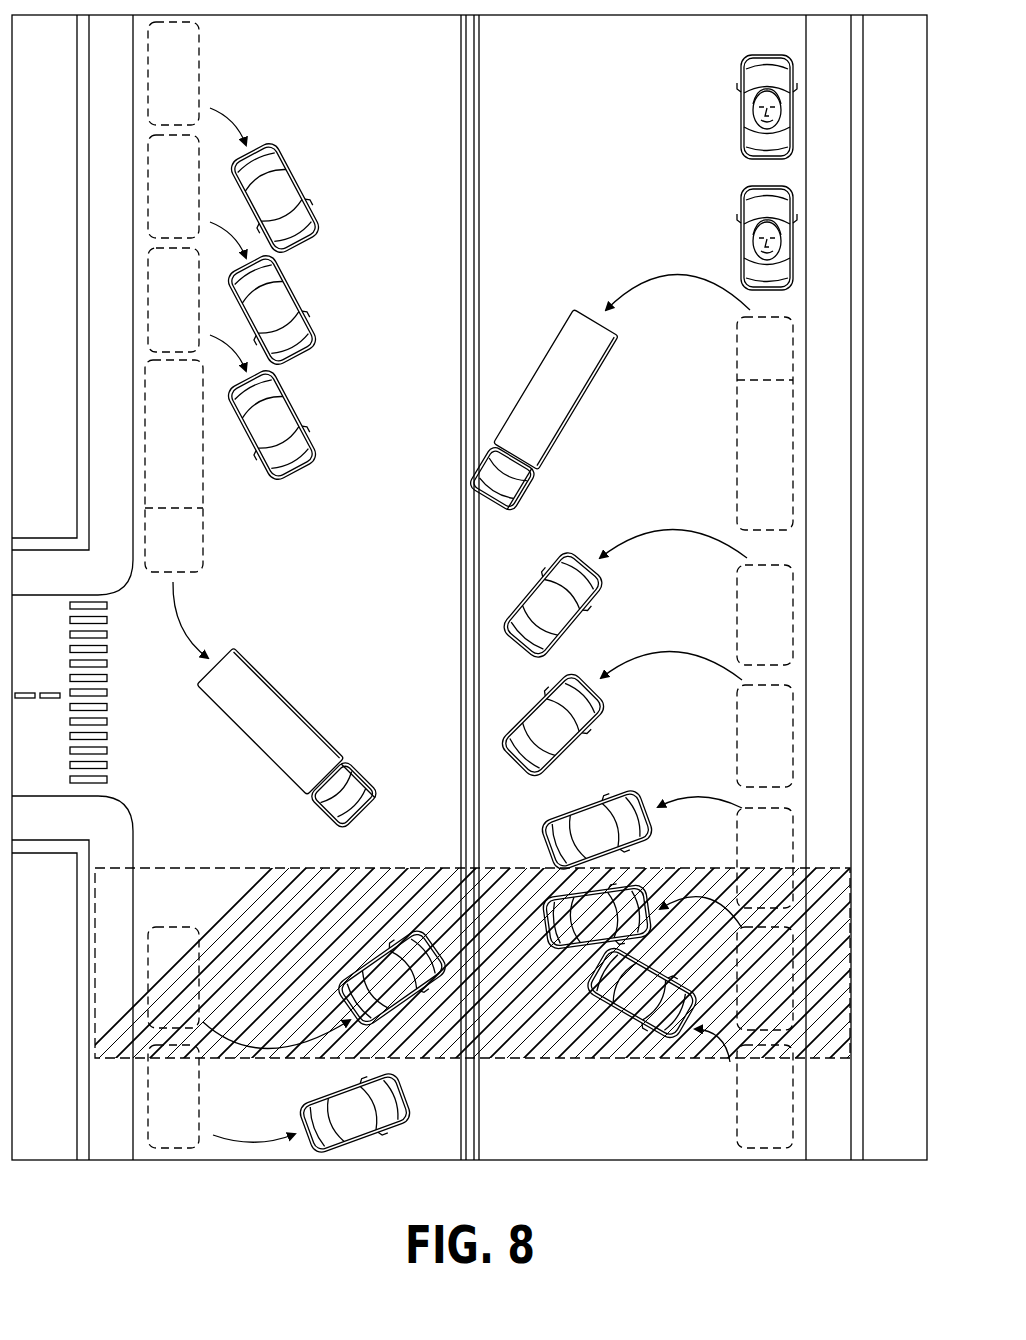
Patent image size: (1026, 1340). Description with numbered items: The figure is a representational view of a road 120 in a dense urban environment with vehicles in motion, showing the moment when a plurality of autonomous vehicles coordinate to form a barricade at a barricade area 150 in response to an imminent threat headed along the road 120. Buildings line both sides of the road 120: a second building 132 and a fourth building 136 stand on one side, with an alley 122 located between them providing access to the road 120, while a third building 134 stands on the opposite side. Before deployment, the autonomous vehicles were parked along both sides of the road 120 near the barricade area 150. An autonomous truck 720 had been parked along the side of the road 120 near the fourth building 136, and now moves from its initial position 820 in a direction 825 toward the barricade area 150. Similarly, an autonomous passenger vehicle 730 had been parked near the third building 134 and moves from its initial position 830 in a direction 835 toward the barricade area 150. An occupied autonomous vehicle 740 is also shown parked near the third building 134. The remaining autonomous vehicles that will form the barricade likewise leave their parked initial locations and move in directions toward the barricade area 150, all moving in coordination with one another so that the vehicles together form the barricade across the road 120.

The road 120 is at (367, 121).
The alley 122 is at (31, 620).
The second building 132 is at (68, 1011).
The third building 134 is at (918, 574).
The fourth building 136 is at (68, 283).
The barricade area 150 is at (272, 868).
The autonomous truck 720 is at (309, 717).
The autonomous passenger vehicle 730 is at (572, 555).
The occupied autonomous vehicle 740 is at (740, 237).
The initial position 820 is at (205, 486).
The direction 825 is at (189, 625).
The initial position 830 is at (740, 613).
The direction 835 is at (672, 530).